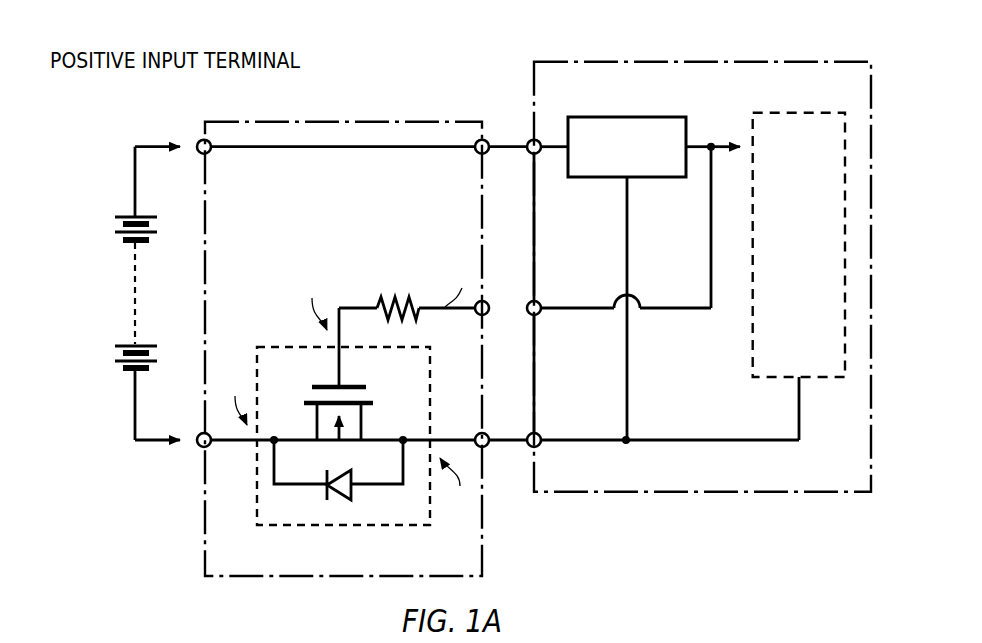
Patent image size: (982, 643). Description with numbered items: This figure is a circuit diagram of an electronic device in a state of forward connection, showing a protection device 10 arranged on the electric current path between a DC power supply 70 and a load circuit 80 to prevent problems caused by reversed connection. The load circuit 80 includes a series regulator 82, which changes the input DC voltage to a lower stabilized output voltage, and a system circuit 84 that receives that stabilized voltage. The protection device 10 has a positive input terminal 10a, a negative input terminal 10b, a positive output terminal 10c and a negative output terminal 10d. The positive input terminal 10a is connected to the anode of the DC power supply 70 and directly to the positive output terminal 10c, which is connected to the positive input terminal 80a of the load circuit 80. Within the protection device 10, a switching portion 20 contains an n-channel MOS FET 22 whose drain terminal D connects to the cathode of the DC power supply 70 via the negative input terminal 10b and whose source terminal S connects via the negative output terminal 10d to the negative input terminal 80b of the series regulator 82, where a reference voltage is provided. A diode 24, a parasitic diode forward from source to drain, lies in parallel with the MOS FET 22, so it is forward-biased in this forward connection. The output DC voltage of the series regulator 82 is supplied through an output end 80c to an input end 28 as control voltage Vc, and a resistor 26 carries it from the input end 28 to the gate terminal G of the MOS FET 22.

The protection device 10 is at (483, 546).
The positive input terminal 10a is at (200, 140).
The negative input terminal 10b is at (203, 448).
The positive output terminal 10c is at (484, 154).
The negative output terminal 10d is at (484, 448).
The switching portion 20 is at (268, 347).
The n-channel type MOS FET 22 is at (314, 386).
The diode 24 is at (358, 499).
The resistor 26 is at (392, 297).
The input end 28 is at (484, 315).
The DC power supply 70 is at (135, 292).
The load circuit 80 is at (703, 493).
The positive input terminal 80a is at (532, 139).
The negative input terminal 80b is at (532, 433).
The output end 80c is at (532, 301).
The series regulator 82 is at (628, 116).
The system circuit 84 is at (800, 112).